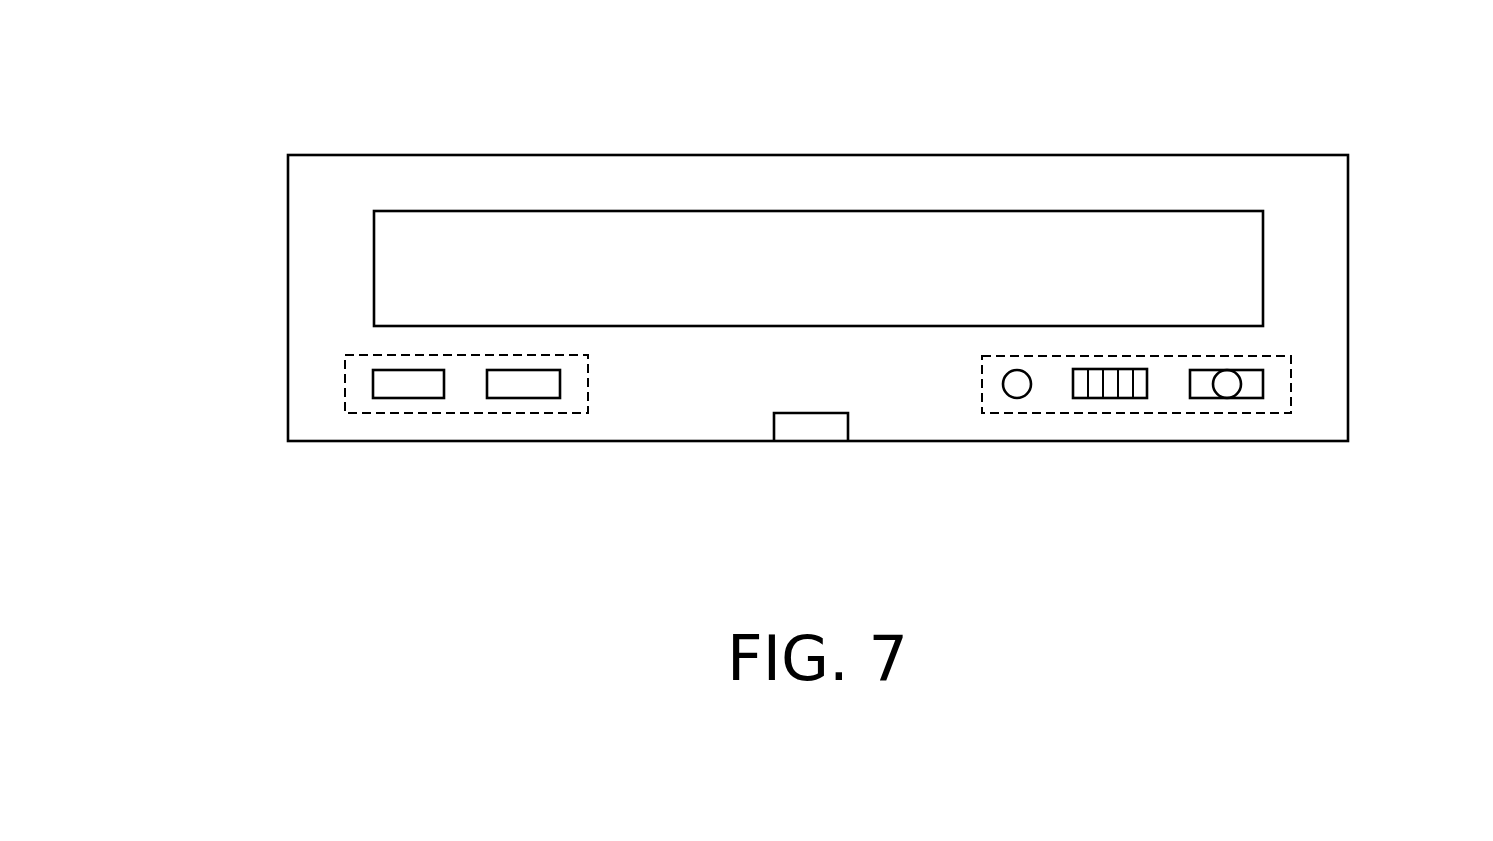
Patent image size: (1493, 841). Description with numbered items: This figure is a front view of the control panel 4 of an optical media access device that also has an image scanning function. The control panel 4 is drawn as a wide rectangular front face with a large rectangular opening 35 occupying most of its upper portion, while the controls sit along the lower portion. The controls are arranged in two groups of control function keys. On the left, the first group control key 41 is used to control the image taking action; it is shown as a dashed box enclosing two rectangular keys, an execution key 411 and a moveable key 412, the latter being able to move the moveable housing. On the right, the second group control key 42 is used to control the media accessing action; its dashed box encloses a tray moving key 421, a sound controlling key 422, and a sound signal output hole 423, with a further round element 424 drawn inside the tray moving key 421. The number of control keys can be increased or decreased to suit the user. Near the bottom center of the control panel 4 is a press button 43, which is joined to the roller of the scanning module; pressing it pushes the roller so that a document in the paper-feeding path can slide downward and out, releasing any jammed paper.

The control panel 4 is at (328, 208).
The display panel 35 is at (713, 275).
The first group control key 41 is at (355, 393).
The execution key 411 is at (410, 392).
The moveable key 412 is at (527, 392).
The second group control key 42 is at (1280, 392).
The tray moving key 421 is at (1250, 382).
The sound controlling key 422 is at (1113, 385).
The sound signal output hole 423 is at (1025, 388).
The knob 424 is at (1227, 390).
The press button 43 is at (815, 430).